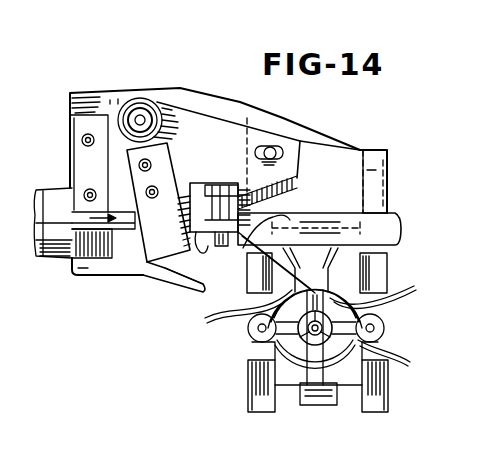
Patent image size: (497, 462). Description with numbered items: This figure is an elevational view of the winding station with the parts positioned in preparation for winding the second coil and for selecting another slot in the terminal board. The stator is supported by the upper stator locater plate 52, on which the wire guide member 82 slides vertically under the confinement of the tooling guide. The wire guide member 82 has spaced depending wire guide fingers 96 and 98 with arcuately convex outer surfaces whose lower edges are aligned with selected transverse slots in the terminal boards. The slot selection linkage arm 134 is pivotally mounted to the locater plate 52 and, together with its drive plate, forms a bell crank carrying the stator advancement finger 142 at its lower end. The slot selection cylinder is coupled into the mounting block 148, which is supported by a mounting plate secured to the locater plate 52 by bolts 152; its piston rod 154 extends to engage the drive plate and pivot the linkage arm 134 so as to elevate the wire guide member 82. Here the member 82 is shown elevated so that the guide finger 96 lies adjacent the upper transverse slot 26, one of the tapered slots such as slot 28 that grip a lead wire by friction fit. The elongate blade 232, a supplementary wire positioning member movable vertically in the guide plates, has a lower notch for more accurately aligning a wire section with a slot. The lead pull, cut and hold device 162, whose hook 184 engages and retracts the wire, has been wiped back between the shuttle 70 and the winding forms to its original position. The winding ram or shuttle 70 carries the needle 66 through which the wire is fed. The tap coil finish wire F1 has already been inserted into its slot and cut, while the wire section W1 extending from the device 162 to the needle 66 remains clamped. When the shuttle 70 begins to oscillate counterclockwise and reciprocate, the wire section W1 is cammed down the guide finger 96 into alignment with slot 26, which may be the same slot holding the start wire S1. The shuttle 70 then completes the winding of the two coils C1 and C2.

The upper stator locater plate 52 is at (88, 95).
The bolts 152 is at (80, 140).
The piston rod 154 is at (104, 194).
The mounting block 148 is at (62, 262).
The slot selection linkage arm 134 is at (280, 133).
The wire guide member 82 is at (335, 146).
The elongate blade 232 is at (386, 172).
The lead pull, cut and hold device 162 is at (222, 183).
The wire section W1 is at (266, 221).
The coil C1 is at (319, 230).
The wire guide finger 98 is at (390, 270).
The tap coil finish wire F1 is at (402, 286).
The needle 66 is at (315, 316).
The wire guide finger 96 is at (250, 289).
The winding ram or shuttle 70 is at (384, 327).
The stator coil start wire S1 is at (212, 322).
The transverse lead wire receiving slot 26 is at (250, 330).
The transverse lead wire receiving slot 28 is at (250, 346).
The hook 184 is at (160, 278).
The stator advancement finger 142 is at (188, 290).
The coil C2 is at (322, 406).